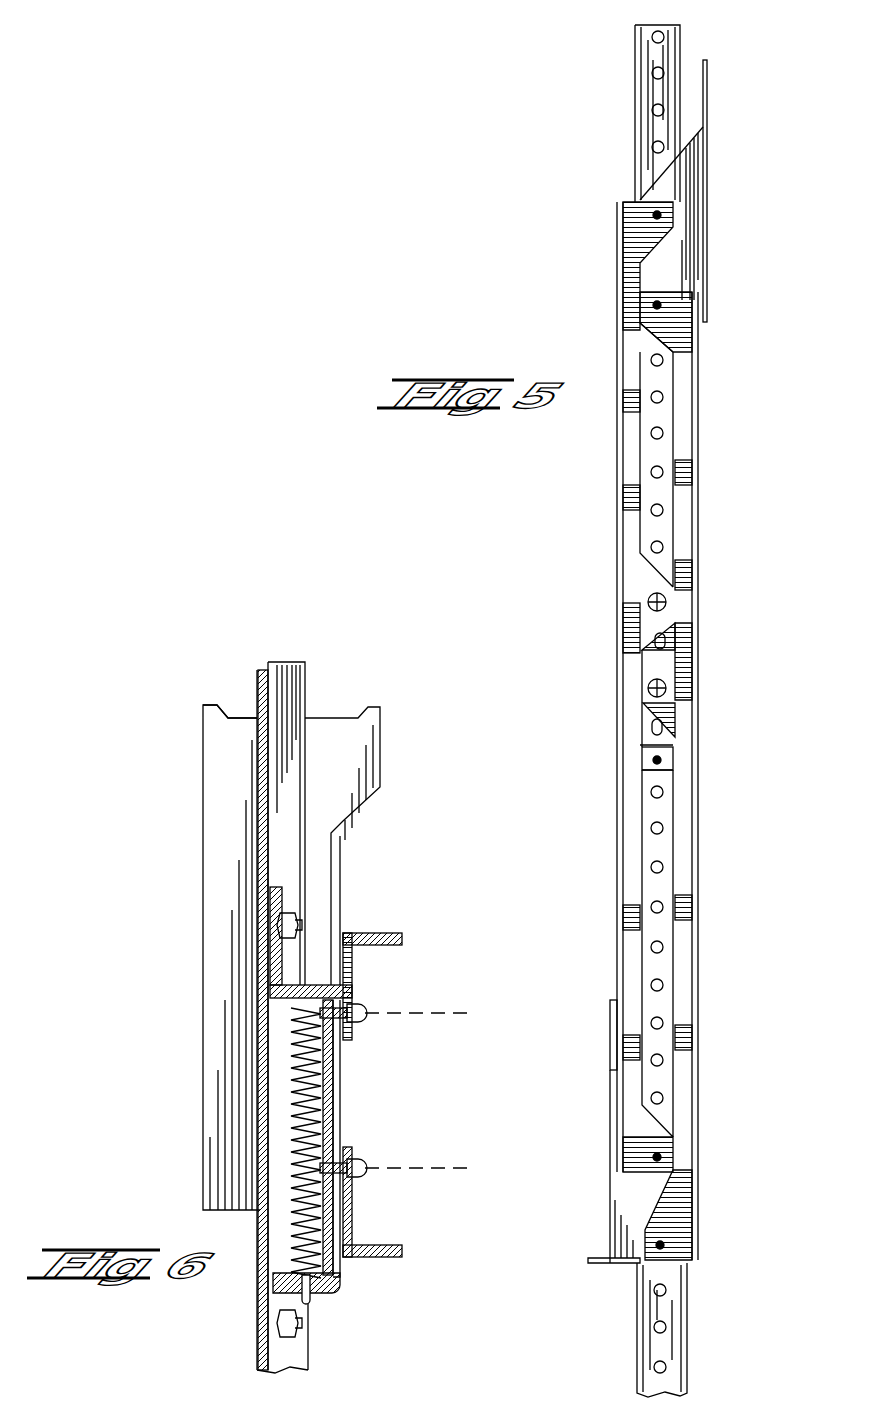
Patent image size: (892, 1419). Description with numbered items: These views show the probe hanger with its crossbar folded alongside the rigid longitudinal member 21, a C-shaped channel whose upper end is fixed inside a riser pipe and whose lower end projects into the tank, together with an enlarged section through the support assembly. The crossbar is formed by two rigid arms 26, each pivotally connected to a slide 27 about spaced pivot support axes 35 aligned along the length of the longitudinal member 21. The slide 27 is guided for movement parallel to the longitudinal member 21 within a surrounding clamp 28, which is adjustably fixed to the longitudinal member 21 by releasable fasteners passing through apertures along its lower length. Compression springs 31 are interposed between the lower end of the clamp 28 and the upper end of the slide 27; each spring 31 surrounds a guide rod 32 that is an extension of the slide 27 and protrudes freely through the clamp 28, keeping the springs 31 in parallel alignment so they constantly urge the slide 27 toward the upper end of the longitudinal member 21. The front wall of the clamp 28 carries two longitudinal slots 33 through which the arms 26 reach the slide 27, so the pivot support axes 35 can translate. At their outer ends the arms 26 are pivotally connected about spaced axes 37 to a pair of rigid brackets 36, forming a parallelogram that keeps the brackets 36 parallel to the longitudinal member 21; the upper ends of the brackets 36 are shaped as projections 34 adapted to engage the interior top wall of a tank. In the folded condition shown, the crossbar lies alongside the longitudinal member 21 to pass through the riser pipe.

In FIG. 5, the longitudinal member 21 is at (635, 135).
In FIG. 6, the longitudinal member 21 is at (300, 680).
In FIG. 5, the arms 26 is at (622, 463).
In FIG. 6, the arms 26 is at (355, 960).
In FIG. 6, the slide 27 is at (327, 1085).
In FIG. 5, the clamp 28 is at (640, 665).
In FIG. 6, the clamp 28 is at (340, 1280).
In FIG. 6, the compression springs 31 is at (326, 1108).
In FIG. 6, the guide rod 32 is at (310, 1300).
In FIG. 5, the longitudinal slots 33 is at (690, 612).
In FIG. 6, the longitudinal slots 33 is at (333, 1053).
In FIG. 6, the projections 34 is at (215, 705).
In FIG. 5, the pivot support axes 35 is at (650, 598).
In FIG. 6, the pivot support axes 35 is at (473, 1013).
In FIG. 5, the brackets 36 is at (690, 170).
In FIG. 6, the brackets 36 is at (210, 750).
In FIG. 5, the axes 37 is at (693, 292).